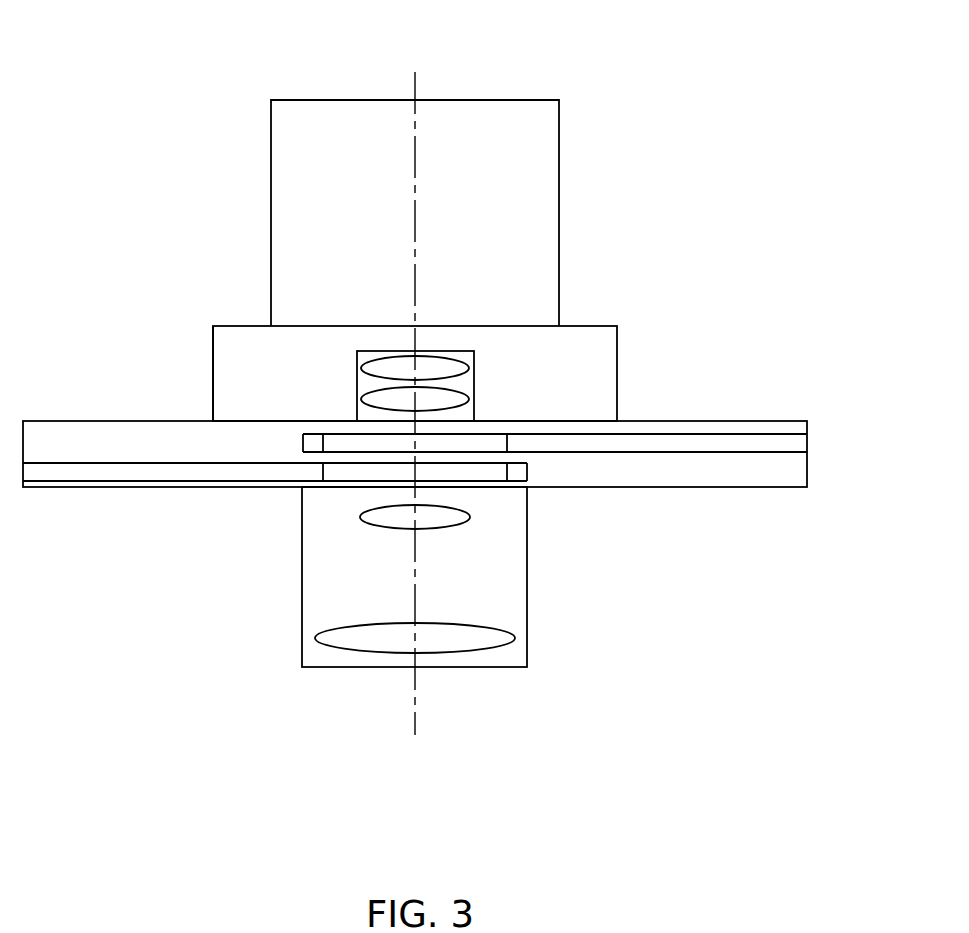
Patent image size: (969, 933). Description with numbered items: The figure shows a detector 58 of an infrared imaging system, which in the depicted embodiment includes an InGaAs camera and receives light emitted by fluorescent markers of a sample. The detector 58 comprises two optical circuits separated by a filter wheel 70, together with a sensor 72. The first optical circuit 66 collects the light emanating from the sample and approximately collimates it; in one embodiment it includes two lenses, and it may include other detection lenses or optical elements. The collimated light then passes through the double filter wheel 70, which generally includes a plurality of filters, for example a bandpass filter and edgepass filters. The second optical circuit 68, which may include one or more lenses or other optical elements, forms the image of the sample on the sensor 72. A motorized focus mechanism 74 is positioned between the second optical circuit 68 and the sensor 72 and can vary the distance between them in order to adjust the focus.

The detector 58 is at (187, 104).
The first optical circuit 66 is at (302, 641).
The second optical circuit 68 is at (213, 371).
The filter wheel 70 is at (807, 442).
The sensor 72 is at (415, 251).
The motorized focus mechanism 74 is at (605, 343).